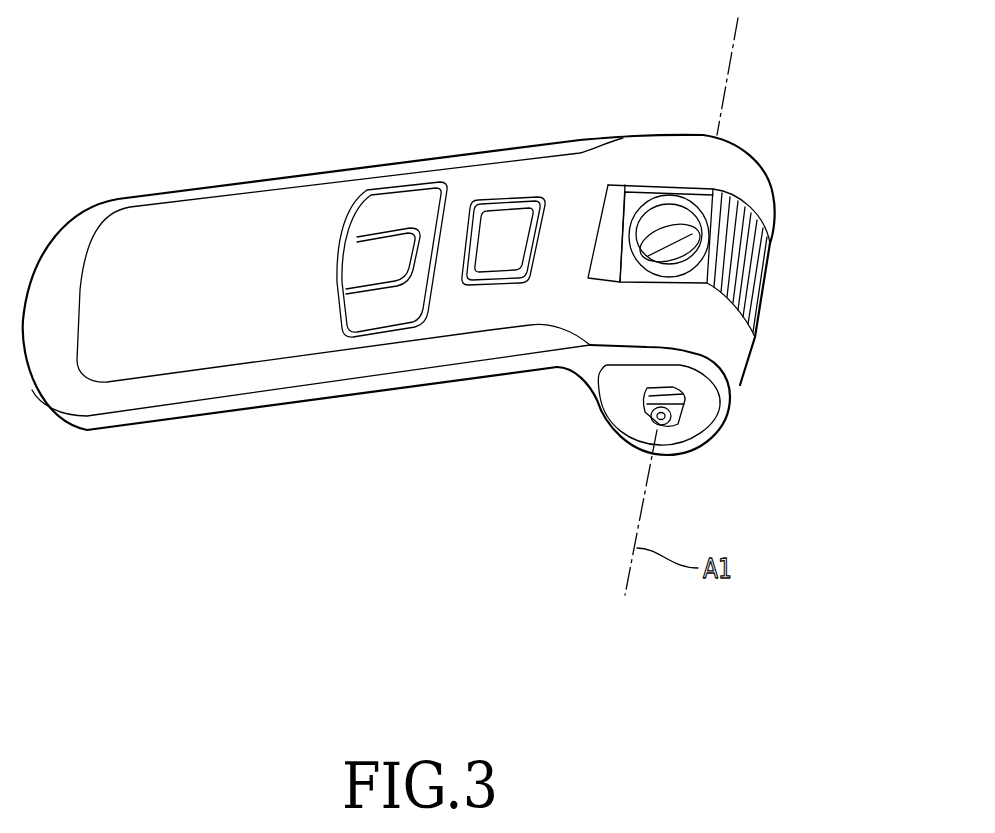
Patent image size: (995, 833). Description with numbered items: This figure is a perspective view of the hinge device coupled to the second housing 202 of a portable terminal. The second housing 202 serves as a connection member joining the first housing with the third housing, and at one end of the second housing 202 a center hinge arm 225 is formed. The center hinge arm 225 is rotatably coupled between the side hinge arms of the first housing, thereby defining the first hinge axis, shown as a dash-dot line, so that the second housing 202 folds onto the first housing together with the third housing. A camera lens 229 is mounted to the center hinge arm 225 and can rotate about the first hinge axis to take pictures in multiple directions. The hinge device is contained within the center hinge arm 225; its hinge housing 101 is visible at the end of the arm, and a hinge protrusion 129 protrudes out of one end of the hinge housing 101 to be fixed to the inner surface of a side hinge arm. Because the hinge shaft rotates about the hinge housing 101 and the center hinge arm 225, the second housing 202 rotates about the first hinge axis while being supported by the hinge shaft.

The second housing 202 is at (325, 32).
The center hinge arm 225 is at (758, 195).
The camera lens 229 is at (752, 282).
The hinge housing 101 is at (707, 418).
The hinge protrusion 129 is at (643, 393).